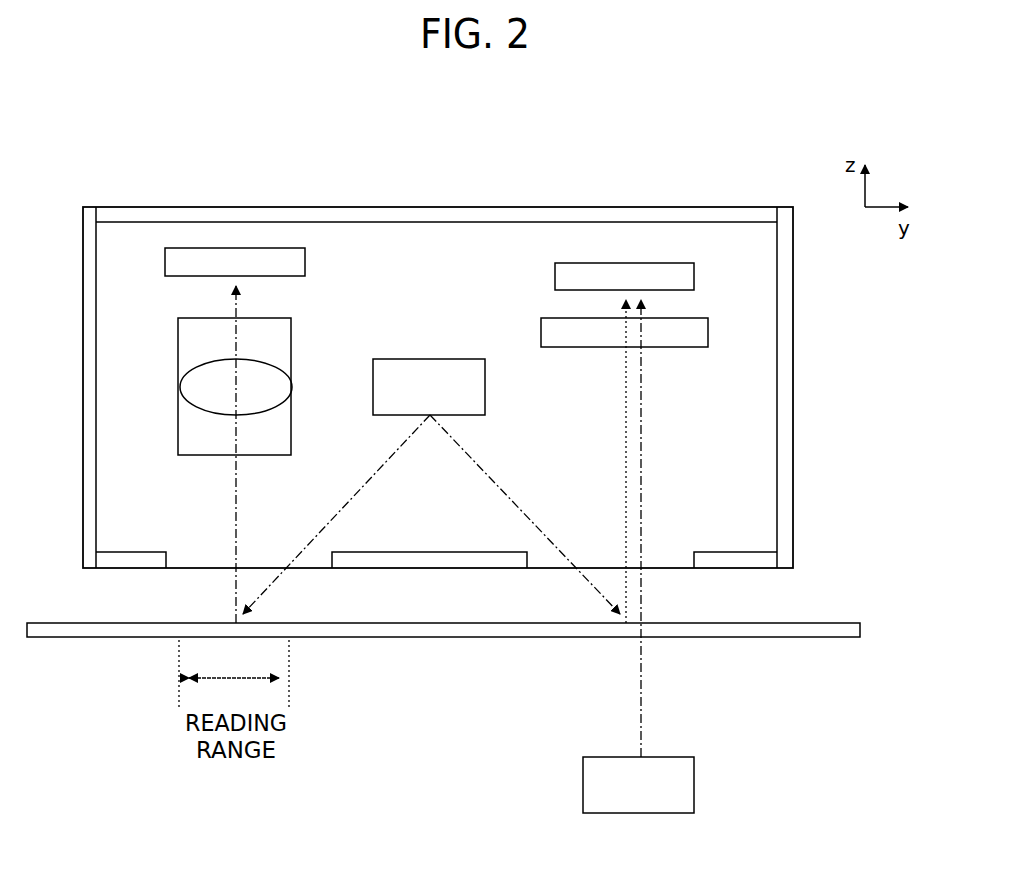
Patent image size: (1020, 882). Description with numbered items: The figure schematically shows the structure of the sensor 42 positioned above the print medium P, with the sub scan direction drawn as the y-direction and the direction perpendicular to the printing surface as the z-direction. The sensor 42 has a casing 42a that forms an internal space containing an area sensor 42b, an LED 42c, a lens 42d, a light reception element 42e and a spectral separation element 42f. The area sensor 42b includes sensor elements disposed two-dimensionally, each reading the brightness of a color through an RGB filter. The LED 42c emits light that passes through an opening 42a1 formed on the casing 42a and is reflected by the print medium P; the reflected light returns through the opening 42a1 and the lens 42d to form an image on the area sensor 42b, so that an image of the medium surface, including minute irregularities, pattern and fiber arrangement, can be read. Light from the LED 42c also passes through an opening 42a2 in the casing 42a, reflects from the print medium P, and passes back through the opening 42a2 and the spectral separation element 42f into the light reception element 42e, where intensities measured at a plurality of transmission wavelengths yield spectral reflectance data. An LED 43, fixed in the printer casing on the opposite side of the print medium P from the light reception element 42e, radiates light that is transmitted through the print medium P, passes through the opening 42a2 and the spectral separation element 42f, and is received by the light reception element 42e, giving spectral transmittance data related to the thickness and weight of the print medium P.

The sensor 42 is at (60, 215).
The casing 42a is at (793, 388).
The opening 42a1 is at (168, 552).
The opening 42a2 is at (694, 552).
The area sensor 42b is at (192, 249).
The LED 42c is at (430, 359).
The lens 42d is at (178, 332).
The light reception element 42e is at (665, 263).
The spectral separation element 42f is at (665, 318).
The print medium P is at (125, 623).
The LED 43 is at (622, 813).